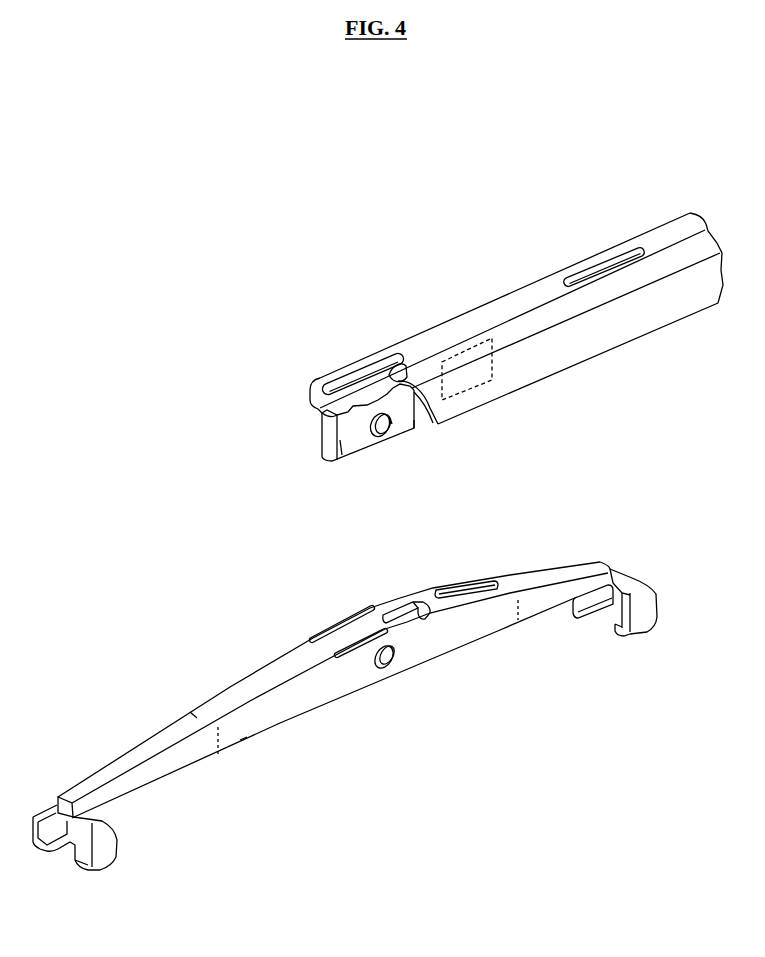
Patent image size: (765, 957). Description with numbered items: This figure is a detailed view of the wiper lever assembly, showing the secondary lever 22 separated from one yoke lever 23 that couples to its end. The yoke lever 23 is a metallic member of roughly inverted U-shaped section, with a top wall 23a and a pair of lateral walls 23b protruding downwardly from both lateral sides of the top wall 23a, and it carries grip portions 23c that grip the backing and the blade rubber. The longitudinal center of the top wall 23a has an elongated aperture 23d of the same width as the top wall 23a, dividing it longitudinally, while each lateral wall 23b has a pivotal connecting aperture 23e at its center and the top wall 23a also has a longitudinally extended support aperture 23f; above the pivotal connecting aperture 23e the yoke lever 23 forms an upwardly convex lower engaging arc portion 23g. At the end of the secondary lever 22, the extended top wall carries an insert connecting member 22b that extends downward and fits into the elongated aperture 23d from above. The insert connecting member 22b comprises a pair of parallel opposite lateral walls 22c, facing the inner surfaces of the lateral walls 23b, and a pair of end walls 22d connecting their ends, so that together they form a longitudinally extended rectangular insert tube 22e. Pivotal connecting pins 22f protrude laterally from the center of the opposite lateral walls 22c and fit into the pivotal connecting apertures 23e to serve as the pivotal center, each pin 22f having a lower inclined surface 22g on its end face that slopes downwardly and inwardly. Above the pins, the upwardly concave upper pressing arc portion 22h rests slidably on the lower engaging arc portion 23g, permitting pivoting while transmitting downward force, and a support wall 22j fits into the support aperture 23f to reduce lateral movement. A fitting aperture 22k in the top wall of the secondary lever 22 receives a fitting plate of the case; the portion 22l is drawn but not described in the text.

The secondary lever 22 is at (653, 228).
The insert connecting member 22b is at (327, 460).
The opposite lateral walls 22c is at (353, 457).
The end walls 22d is at (322, 437).
The rectangular insert tube 22e is at (417, 428).
The pivotal connecting pin 22f is at (392, 424).
The lower inclined surface 22g is at (385, 437).
The upper pressing arc portion 22h is at (388, 397).
The support wall 22j is at (505, 398).
The fitting aperture 22k is at (590, 270).
The rounded end portion 22l is at (322, 413).
The yoke lever 23 is at (230, 687).
The top wall 23a is at (197, 718).
The lateral walls 23b is at (247, 737).
The grip portions 23c is at (100, 857).
The elongated aperture 23d is at (423, 619).
The pivotal connecting aperture 23e is at (397, 660).
The support aperture 23f is at (465, 586).
The lower engaging arc portion 23g is at (378, 613).